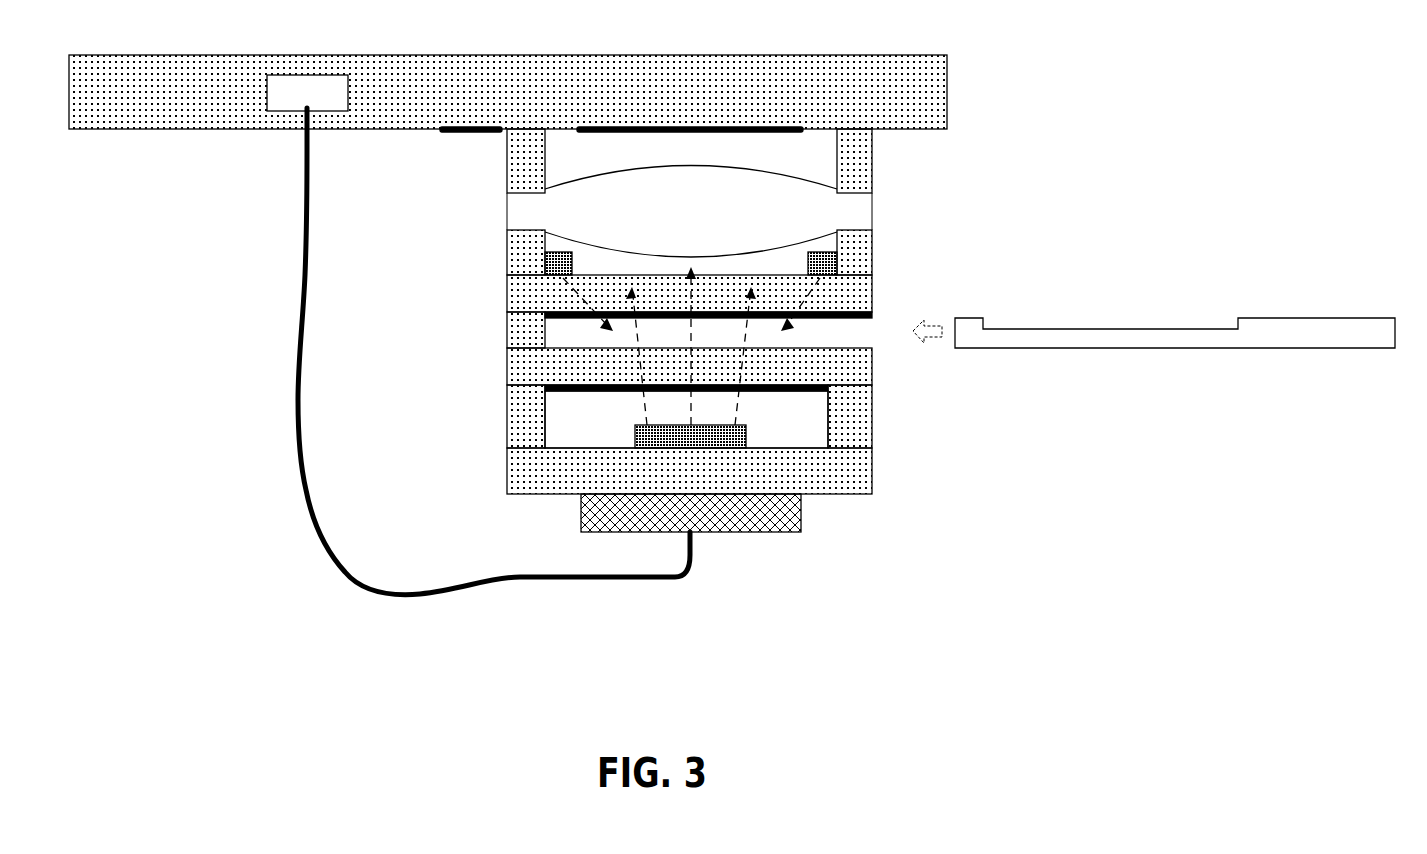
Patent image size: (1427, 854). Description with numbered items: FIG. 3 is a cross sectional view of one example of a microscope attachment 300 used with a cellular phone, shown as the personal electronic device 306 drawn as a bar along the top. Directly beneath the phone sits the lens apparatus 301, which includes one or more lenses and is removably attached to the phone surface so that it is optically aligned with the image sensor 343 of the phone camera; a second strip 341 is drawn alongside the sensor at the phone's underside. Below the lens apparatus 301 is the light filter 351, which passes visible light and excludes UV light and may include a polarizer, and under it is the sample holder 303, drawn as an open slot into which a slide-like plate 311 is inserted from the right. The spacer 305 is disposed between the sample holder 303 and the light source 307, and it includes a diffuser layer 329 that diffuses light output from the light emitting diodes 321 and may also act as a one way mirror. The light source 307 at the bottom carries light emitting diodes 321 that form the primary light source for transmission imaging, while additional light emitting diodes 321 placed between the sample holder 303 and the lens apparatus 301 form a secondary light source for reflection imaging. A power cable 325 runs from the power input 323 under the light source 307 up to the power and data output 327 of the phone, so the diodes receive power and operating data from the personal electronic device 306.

The microscope attachment 300 is at (906, 556).
The lens apparatus 301 is at (1112, 191).
The sample holder 303 is at (497, 312).
The spacer 305 is at (1028, 395).
The personal electronic device 306 is at (937, 101).
The light source 307 is at (1090, 486).
The slide-in plate / filter 311 is at (1338, 343).
The light emitting diodes 321 is at (545, 260).
The power input 323 is at (740, 515).
The power cable 325 is at (293, 375).
The power and data output 327 is at (275, 83).
The diffuser layer 329 is at (617, 392).
The mounting strip 341 is at (467, 128).
The image sensor 343 is at (697, 128).
The light filter 351 is at (563, 313).